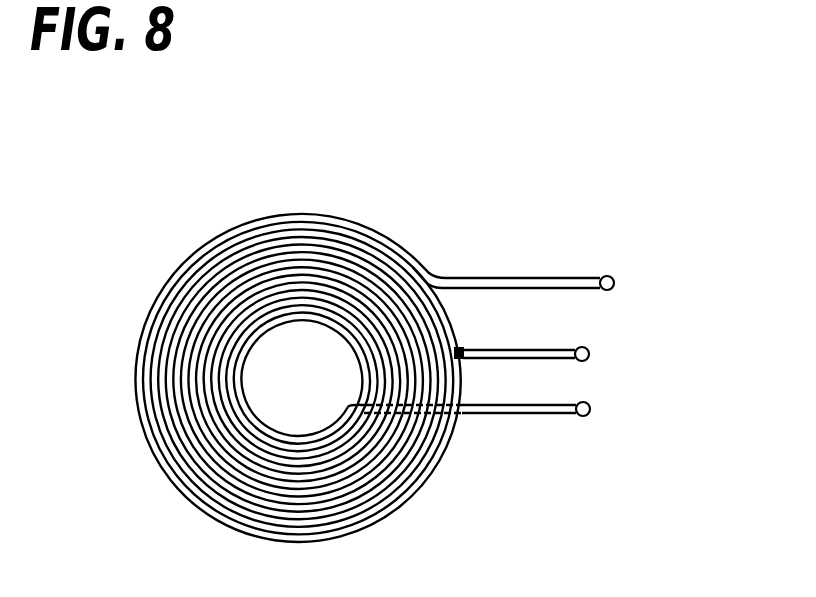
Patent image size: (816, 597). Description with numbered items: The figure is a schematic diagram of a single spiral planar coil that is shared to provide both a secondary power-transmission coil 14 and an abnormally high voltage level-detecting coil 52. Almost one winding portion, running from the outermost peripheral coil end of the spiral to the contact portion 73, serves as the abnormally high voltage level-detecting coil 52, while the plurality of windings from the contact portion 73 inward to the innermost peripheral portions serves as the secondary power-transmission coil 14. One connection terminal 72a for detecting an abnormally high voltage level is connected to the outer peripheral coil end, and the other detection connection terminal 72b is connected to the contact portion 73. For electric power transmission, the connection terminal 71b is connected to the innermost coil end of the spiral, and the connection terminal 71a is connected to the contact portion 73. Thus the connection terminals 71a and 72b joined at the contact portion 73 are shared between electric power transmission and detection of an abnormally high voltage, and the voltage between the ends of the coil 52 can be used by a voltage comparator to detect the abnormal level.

The secondary power-transmission coil 14 is at (333, 381).
The abnormally high voltage level-detecting coil 52 is at (403, 245).
The connection terminal for electric power transmission 71a is at (589, 356).
The connection terminal for electric power transmission 71b is at (590, 409).
The connection terminal for detection of an abnormally high voltage level 72a is at (614, 283).
The connection terminal for detection of an abnormally high voltage level 72b is at (576, 350).
The contact portion 73 is at (463, 357).